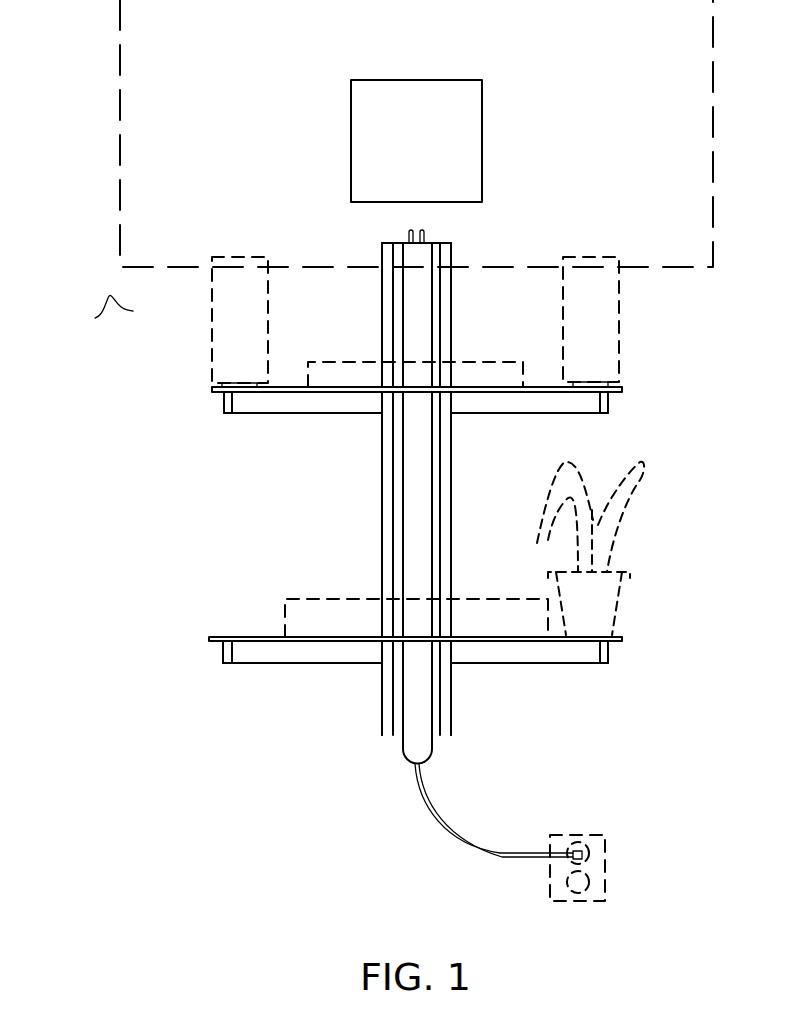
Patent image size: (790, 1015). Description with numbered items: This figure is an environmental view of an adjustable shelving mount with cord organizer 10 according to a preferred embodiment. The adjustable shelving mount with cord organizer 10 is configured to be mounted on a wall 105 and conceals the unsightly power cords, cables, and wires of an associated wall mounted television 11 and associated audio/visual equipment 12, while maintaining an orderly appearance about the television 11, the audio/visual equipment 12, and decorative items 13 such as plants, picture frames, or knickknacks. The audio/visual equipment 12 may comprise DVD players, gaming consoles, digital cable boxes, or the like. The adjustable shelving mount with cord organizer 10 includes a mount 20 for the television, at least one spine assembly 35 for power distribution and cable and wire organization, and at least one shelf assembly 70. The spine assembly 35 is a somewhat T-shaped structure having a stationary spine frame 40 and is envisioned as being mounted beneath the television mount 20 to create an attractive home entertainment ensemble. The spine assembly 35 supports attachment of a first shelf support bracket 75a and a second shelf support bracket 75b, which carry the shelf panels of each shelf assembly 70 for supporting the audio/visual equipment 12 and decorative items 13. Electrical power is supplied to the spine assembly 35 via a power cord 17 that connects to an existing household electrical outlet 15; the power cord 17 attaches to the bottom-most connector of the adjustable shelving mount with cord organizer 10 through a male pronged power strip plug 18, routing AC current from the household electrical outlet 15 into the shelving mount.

The adjustable shelving mount with cord organizer 10 is at (311, 232).
The wall mounted television 11 is at (119, 212).
The audio/visual equipment 12 is at (498, 362).
The decorative items 13 is at (603, 528).
The household electrical outlet 15 is at (607, 852).
The power cord 17 is at (455, 838).
The male pronged power strip plug 18 is at (402, 745).
The mount 20 is at (482, 108).
The spine assembly 35 is at (448, 286).
The spine frame 40 is at (382, 705).
The shelf assembly 70 is at (297, 402).
The first shelf support bracket 75a is at (610, 401).
The second shelf support bracket 75b is at (222, 404).
The wall 105 is at (95, 318).